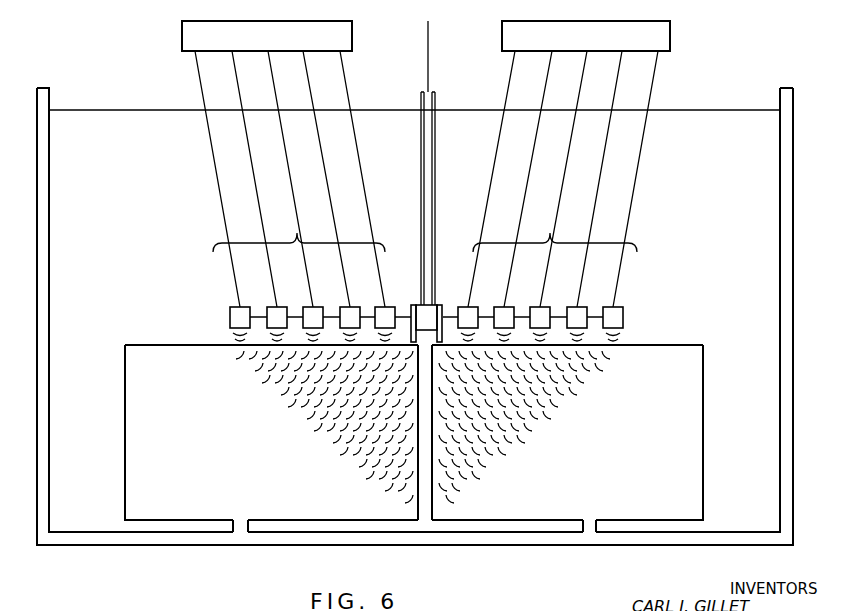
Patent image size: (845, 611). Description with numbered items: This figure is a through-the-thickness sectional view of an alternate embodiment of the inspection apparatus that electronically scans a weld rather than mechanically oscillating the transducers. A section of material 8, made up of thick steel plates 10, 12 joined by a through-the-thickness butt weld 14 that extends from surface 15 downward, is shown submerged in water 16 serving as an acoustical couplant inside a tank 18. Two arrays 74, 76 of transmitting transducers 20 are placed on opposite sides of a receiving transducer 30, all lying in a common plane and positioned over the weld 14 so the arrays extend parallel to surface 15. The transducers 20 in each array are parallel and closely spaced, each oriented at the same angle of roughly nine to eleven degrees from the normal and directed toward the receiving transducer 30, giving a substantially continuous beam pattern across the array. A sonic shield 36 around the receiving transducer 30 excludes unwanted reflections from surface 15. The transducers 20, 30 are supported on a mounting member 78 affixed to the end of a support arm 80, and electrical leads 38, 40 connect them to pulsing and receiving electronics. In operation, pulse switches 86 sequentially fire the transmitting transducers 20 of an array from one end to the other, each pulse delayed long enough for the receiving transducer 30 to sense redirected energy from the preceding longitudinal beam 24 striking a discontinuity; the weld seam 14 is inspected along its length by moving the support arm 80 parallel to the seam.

The section of material 8 is at (159, 317).
The steel plate 10 is at (183, 438).
The steel plate 12 is at (660, 438).
The butt weld 14 is at (423, 505).
The surface 15 is at (668, 345).
The water 16 is at (722, 178).
The tank 18 is at (786, 185).
The transmitting transducer 20 is at (632, 292).
The longitudinal beam 24 is at (423, 427).
The receiving transducer 30 is at (440, 305).
The sonic shield 36 is at (408, 305).
The electrical lead 38 is at (427, 59).
The electrical lead 40 is at (202, 92).
The array of transducers 74 is at (299, 229).
The array of transducers 76 is at (555, 229).
The mounting member 78 is at (447, 303).
The support arm 80 is at (433, 94).
The pulse switches 86 is at (426, 36).